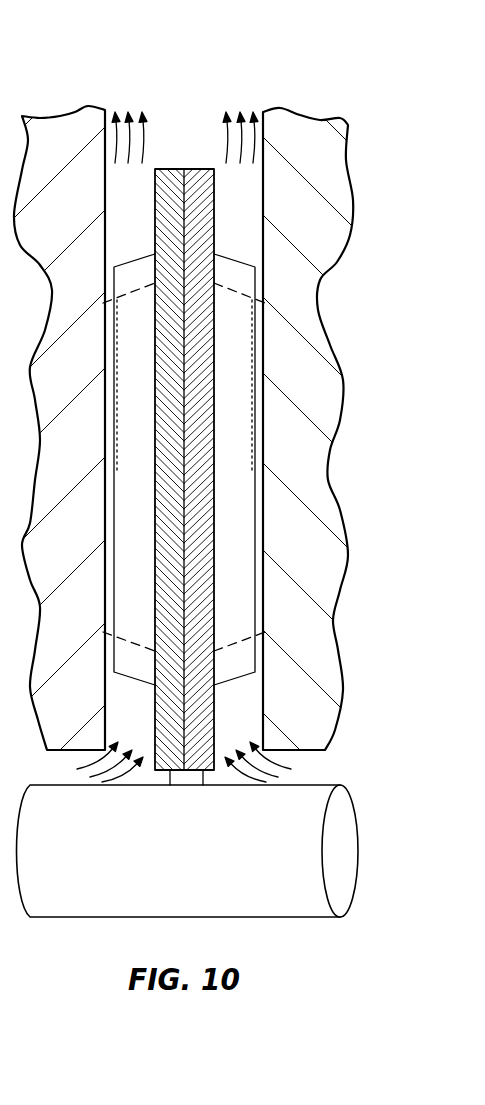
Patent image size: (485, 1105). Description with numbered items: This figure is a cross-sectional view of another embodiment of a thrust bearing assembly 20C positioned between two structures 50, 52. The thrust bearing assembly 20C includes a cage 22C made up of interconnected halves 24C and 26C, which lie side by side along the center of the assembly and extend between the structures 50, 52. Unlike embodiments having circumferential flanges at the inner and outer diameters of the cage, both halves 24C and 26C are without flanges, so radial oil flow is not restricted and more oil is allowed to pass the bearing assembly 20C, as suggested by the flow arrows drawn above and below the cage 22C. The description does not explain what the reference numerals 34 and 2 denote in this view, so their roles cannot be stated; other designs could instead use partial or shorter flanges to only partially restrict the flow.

The structure 50 is at (63, 133).
The structure 52 is at (303, 140).
The cage 22C is at (176, 168).
The thrust bearing assembly 20C is at (207, 104).
The housing 34 is at (233, 273).
The gap 2 is at (260, 367).
The half 26C is at (170, 786).
The half 24C is at (203, 786).